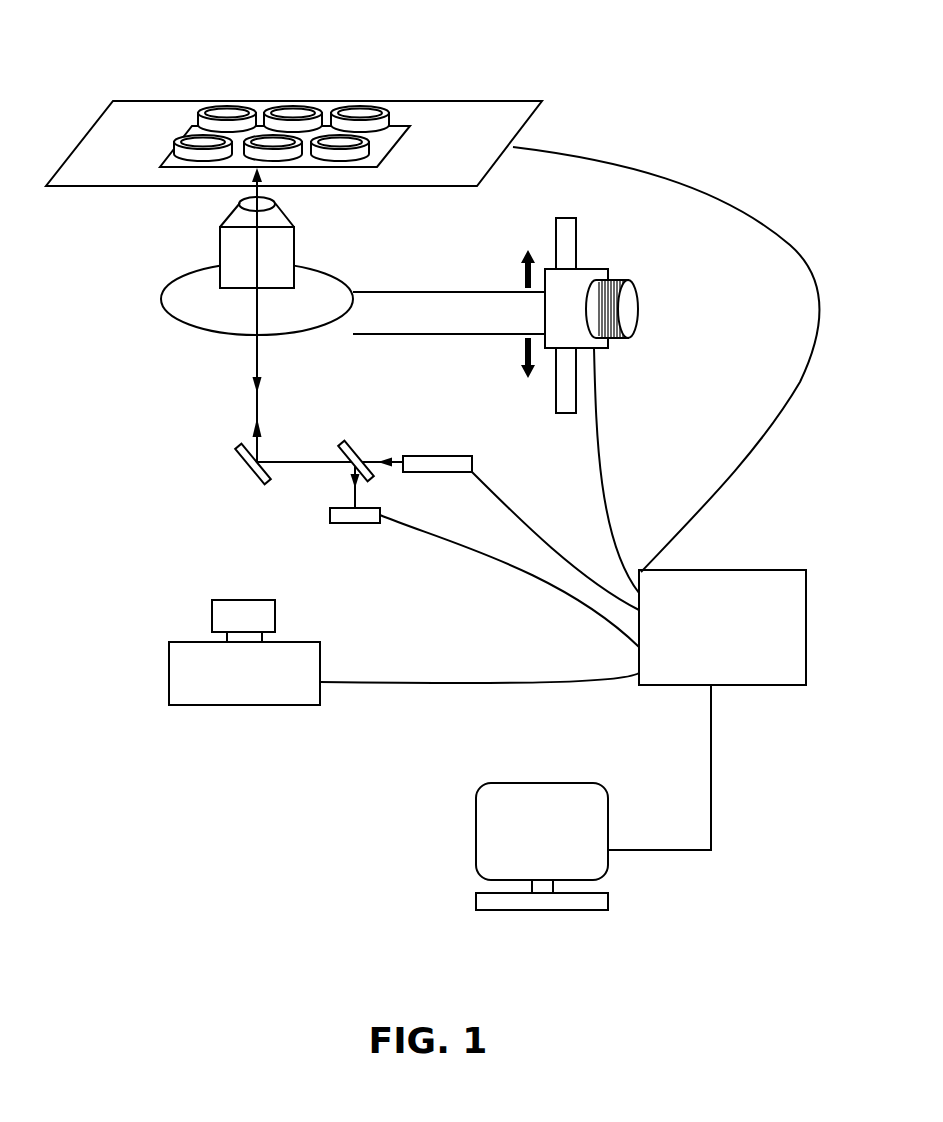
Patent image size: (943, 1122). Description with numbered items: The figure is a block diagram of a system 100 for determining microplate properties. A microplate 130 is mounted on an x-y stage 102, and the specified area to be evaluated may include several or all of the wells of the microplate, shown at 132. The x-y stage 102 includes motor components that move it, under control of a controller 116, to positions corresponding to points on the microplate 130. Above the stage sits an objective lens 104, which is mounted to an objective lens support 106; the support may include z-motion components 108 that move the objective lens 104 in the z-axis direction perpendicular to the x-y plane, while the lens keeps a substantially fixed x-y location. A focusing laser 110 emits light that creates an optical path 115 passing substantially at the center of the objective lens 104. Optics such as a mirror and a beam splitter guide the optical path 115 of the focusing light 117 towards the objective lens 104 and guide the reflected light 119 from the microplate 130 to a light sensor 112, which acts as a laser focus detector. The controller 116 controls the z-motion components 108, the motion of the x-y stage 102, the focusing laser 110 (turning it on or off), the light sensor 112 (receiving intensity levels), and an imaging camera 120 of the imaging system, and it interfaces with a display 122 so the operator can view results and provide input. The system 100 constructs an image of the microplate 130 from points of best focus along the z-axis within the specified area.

The system 100 is at (701, 167).
The x-y stage 102 is at (545, 108).
The objective lens 104 is at (217, 225).
The objective lens support 106 is at (466, 325).
The z-motion components 108 is at (629, 345).
The focusing laser 110 is at (452, 448).
The light sensor 112 is at (328, 513).
The optical path 115 is at (255, 347).
The controller 116 is at (753, 572).
The focusing light 117 is at (372, 457).
The reflected light 119 is at (248, 382).
The imaging camera 120 is at (323, 652).
The display 122 is at (533, 782).
The microplate 130 is at (272, 92).
The wells of the microplate 132 is at (168, 160).